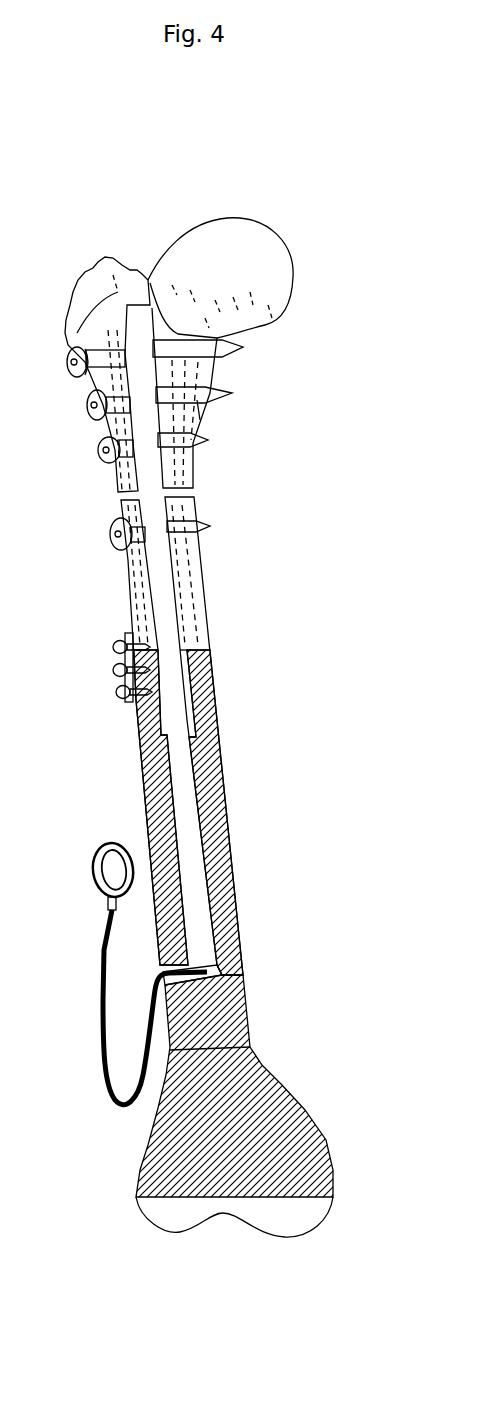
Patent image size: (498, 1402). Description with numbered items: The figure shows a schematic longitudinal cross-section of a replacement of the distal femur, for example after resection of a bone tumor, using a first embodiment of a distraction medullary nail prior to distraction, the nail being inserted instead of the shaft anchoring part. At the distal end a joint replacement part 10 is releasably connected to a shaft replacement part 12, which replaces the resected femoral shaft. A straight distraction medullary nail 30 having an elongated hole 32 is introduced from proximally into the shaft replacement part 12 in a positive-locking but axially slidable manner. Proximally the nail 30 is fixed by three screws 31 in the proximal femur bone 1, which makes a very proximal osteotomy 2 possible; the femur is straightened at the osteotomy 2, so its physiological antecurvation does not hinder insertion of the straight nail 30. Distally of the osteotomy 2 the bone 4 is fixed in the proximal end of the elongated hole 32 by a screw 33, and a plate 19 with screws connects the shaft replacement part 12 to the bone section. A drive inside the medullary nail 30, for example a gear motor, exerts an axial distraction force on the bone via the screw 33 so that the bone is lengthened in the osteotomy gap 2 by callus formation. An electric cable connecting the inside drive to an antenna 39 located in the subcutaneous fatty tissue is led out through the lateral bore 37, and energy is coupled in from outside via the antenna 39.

The proximal femur bone 1 is at (105, 378).
The osteotomy 2 is at (118, 500).
The medial bone segment 4 is at (188, 577).
The joint replacement part 10 is at (247, 1119).
The shaft replacement part 12 is at (223, 873).
The plate 19 is at (120, 658).
The distraction medullary nail 30 is at (185, 788).
The screws 31 is at (252, 337).
The elongated hole 32 is at (182, 625).
The screw 33 is at (194, 525).
The lateral bore 37 is at (218, 967).
The antenna 39 is at (113, 870).